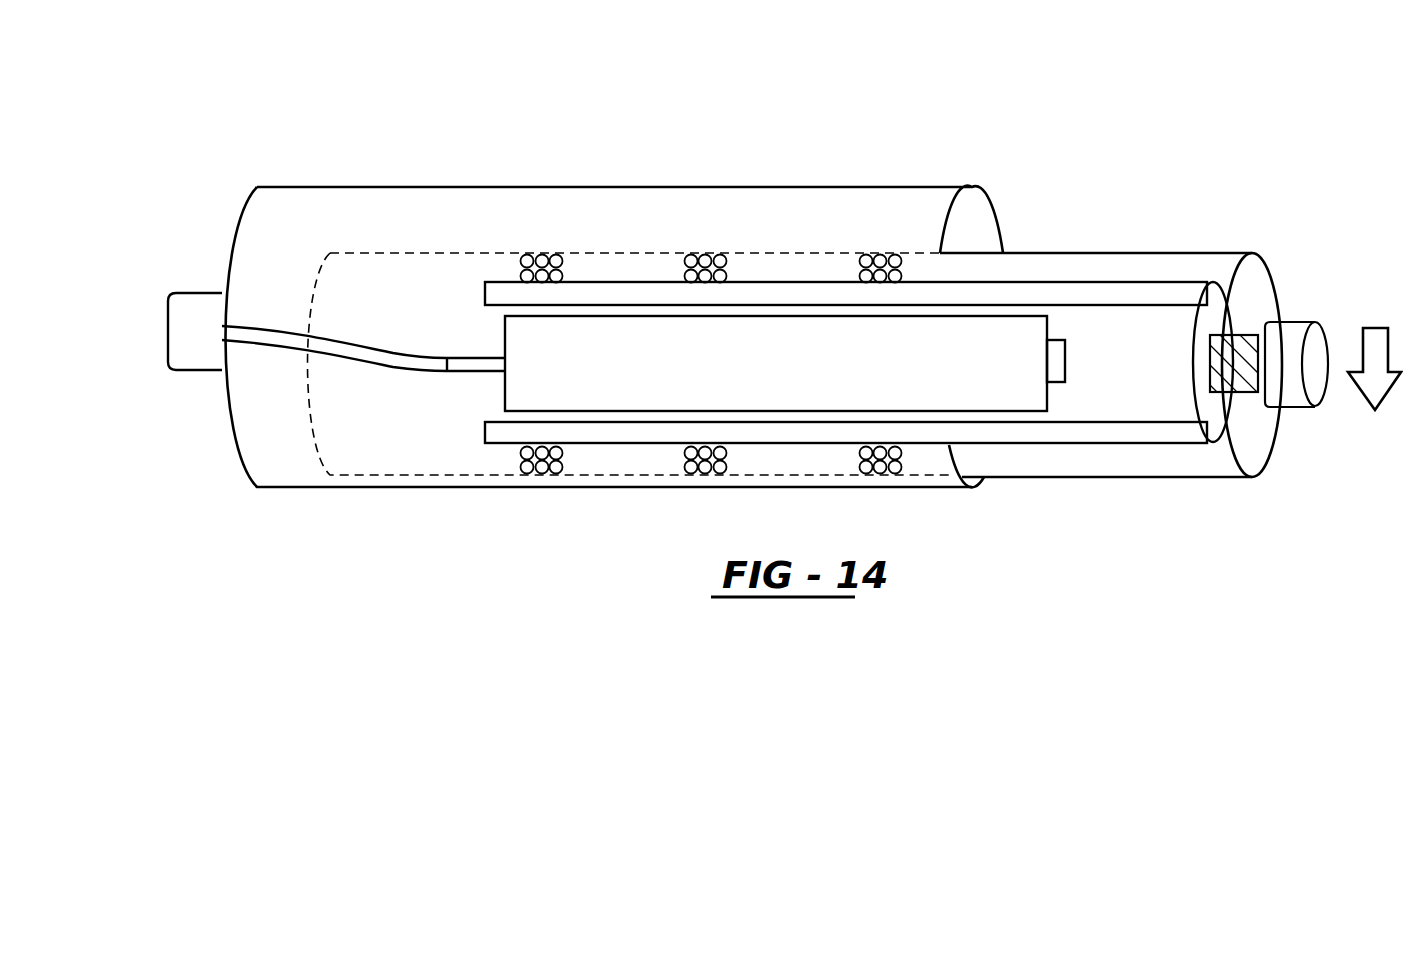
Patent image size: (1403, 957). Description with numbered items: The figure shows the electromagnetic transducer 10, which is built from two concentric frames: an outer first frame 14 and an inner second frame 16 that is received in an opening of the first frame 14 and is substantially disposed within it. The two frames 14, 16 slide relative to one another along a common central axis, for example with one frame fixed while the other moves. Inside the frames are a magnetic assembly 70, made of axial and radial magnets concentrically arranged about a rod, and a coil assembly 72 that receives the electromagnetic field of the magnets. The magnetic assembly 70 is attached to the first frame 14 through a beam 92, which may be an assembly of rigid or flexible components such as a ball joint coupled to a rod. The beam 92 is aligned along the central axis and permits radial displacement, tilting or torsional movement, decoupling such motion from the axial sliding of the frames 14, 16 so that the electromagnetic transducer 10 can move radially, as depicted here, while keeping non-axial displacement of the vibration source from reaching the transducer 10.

The electromagnetic transducer 10 is at (875, 81).
The first frame 14 is at (494, 186).
The second frame 16 is at (1150, 253).
The magnetic assembly 70 is at (537, 383).
The coil assembly 72 is at (910, 266).
The beam 92 is at (279, 327).